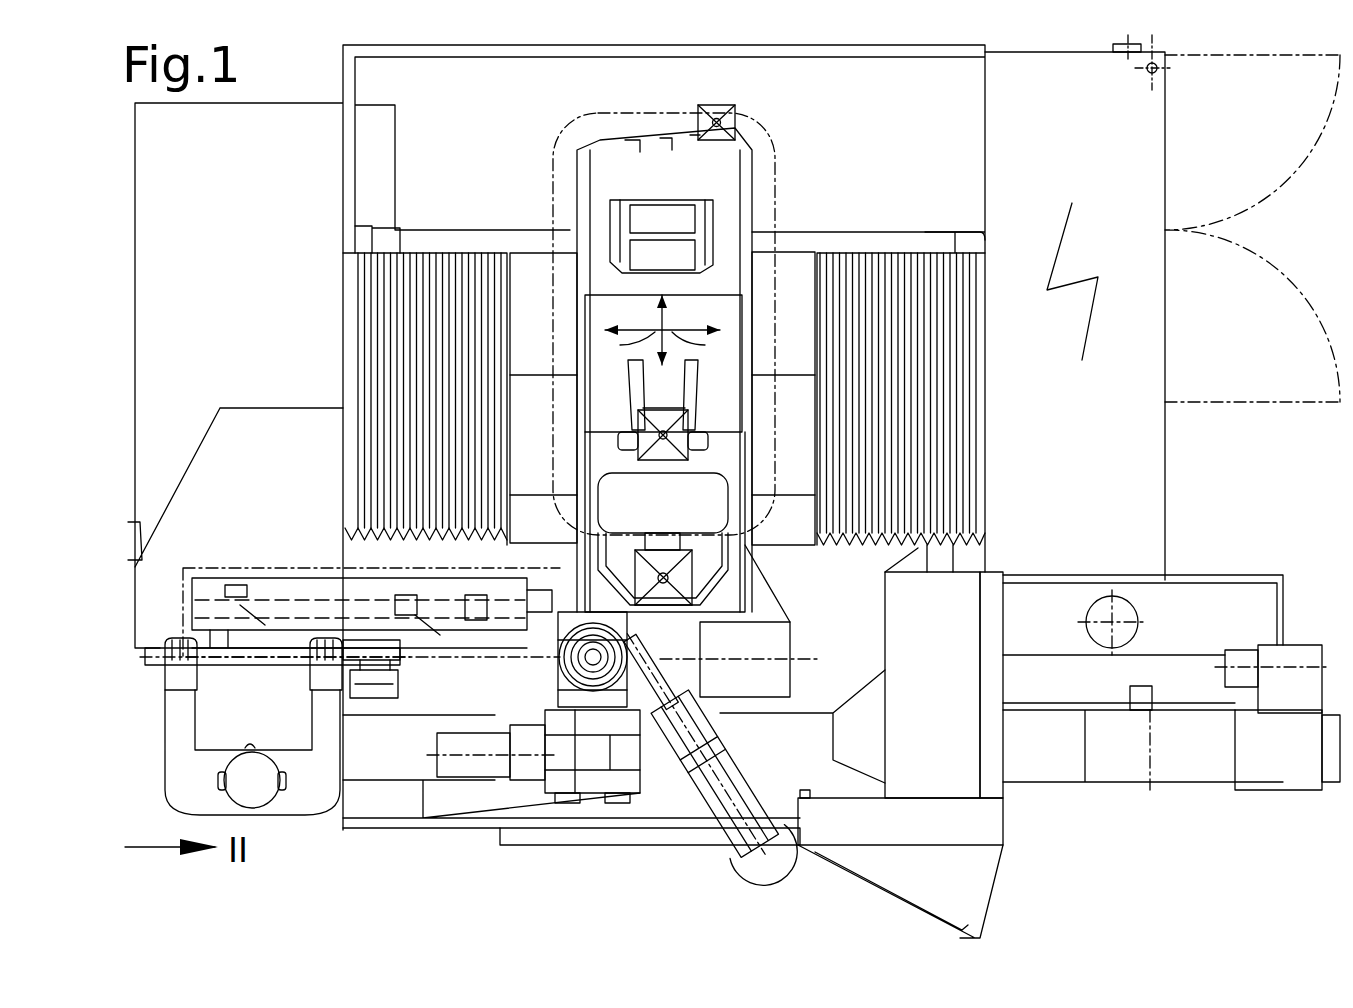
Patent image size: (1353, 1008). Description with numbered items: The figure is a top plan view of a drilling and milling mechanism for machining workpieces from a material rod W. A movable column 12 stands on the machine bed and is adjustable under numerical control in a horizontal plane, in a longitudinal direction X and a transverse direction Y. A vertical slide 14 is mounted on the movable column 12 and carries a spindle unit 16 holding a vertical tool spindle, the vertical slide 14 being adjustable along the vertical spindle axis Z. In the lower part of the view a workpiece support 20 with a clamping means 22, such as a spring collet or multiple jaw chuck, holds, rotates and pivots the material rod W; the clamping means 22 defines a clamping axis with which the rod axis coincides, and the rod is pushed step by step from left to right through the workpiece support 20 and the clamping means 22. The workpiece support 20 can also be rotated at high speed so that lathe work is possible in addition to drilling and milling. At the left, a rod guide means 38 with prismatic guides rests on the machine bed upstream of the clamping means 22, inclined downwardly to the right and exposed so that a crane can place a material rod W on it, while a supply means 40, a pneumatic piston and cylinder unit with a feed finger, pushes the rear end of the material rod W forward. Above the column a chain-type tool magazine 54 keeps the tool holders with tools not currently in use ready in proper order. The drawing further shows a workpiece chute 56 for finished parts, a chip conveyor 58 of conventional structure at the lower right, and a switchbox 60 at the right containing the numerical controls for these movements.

The movable column 12 is at (712, 288).
The vertical slide 14 is at (680, 515).
The spindle unit 16 is at (737, 566).
The workpiece support 20 is at (560, 657).
The clamping means 22 is at (578, 665).
The rod guide means 38 is at (388, 658).
The supply means 40 is at (272, 592).
The tool magazine 54 is at (770, 126).
The workpiece chute 56 is at (740, 862).
The chip conveyor 58 is at (1058, 760).
The switchbox 60 is at (1145, 335).
The material rod W is at (148, 668).